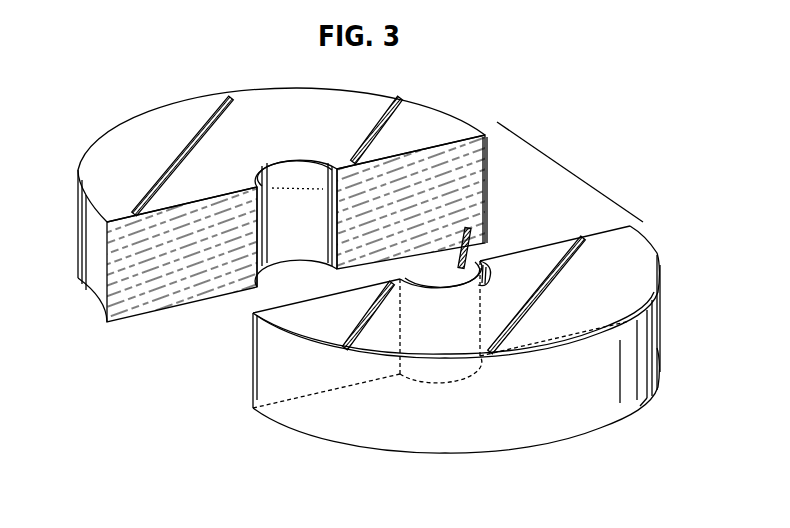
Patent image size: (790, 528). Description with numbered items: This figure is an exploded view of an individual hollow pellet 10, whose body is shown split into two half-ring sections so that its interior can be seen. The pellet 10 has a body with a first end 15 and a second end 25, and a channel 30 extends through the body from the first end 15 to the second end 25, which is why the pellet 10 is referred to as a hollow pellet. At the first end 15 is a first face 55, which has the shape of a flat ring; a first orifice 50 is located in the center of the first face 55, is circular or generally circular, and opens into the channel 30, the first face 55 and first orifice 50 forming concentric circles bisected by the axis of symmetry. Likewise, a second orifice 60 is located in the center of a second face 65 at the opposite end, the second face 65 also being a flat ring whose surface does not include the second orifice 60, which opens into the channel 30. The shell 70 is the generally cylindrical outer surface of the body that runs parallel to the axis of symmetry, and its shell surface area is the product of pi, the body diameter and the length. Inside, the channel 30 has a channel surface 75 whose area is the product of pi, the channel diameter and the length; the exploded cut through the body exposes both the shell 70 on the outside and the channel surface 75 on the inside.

The pellet 10 is at (111, 96).
The first end 15 is at (650, 226).
The second end 25 is at (646, 402).
The channel 30 is at (317, 170).
The first orifice 50 is at (305, 165).
The first face 55 is at (183, 120).
The second orifice 60 is at (290, 257).
The second face 65 is at (147, 313).
The shell 70 is at (97, 290).
The channel surface 75 is at (281, 166).